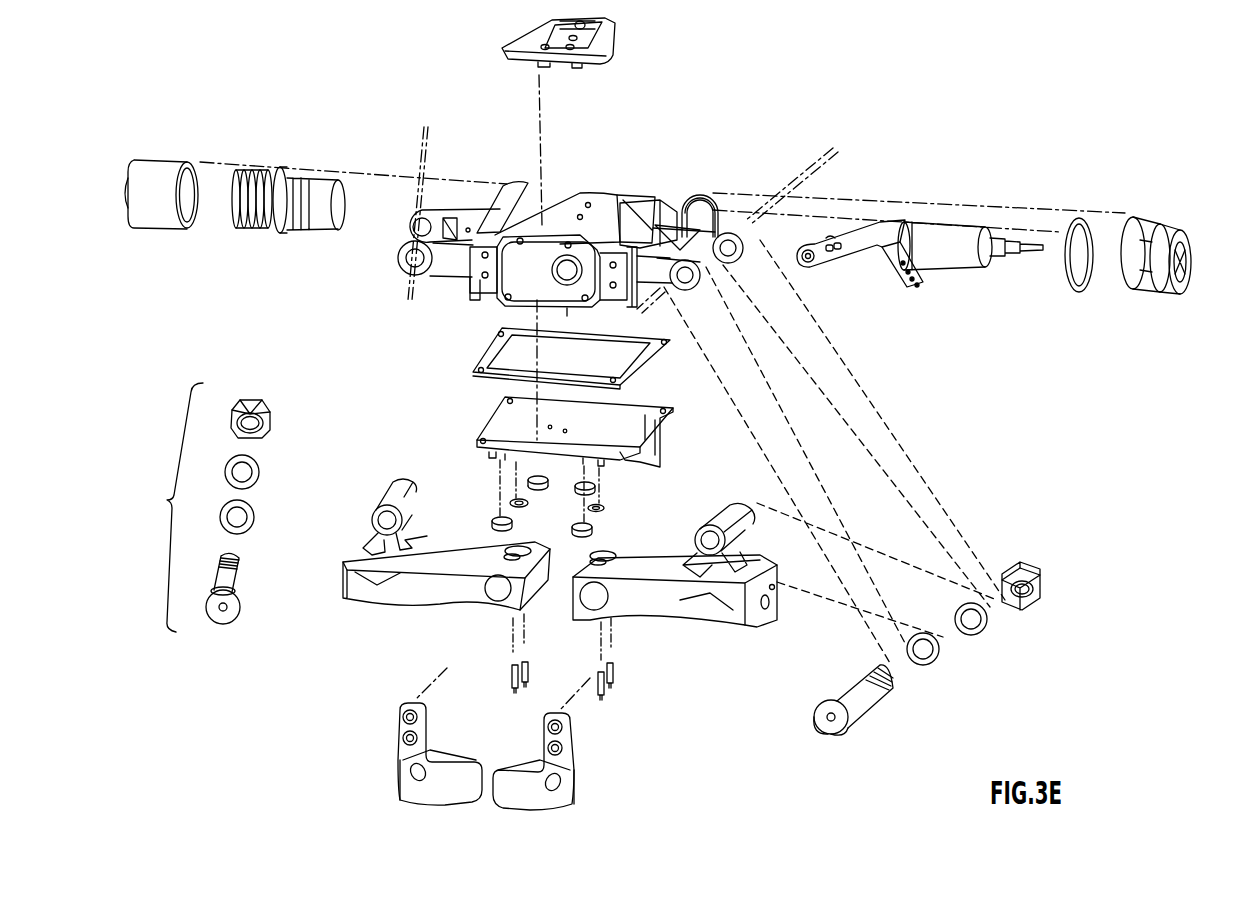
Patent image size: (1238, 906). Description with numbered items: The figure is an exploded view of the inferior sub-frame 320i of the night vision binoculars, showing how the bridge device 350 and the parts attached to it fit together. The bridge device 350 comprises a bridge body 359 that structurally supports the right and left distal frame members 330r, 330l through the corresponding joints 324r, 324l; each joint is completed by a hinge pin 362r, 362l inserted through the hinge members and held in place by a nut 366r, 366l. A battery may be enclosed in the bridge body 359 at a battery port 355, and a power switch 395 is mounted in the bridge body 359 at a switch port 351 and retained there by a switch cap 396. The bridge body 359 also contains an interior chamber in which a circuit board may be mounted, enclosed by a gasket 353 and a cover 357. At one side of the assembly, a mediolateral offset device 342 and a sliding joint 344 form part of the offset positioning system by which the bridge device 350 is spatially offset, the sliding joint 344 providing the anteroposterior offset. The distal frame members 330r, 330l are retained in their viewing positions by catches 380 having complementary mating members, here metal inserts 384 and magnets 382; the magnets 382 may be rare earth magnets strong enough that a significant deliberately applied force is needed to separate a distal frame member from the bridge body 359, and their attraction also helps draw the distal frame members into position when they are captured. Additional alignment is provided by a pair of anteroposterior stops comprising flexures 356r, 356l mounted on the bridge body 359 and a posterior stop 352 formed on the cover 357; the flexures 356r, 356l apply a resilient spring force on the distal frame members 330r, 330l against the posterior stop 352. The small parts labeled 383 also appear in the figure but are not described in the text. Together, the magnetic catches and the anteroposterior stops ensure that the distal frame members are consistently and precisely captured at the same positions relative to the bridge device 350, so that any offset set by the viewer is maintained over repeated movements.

The inferior sub-frame 320i is at (662, 387).
The mediolateral offset device 342 is at (162, 160).
The sliding joint 344 is at (282, 168).
The posterior stop 352 is at (614, 40).
The bridge device 350 is at (586, 200).
The battery port 355 is at (498, 174).
The bridge body 359 is at (560, 186).
The switch port 351 is at (733, 197).
The gasket 353 is at (490, 357).
The cover 357 is at (492, 426).
The catch 380 is at (550, 498).
The magnet 382 is at (543, 489).
The metal insert 384 is at (606, 508).
The joint 324r is at (356, 489).
The joint 324l is at (716, 496).
The distal frame member 330r is at (342, 578).
The distal frame member 330l is at (762, 612).
The screws 383 is at (625, 667).
The nut 366r is at (255, 397).
The hinge pin 362r is at (238, 616).
The flexure 356r is at (392, 766).
The flexure 356l is at (572, 782).
The nut 366l is at (1038, 578).
The hinge pin 362l is at (863, 707).
The power switch 395 is at (957, 265).
The switch cap 396 is at (1158, 292).